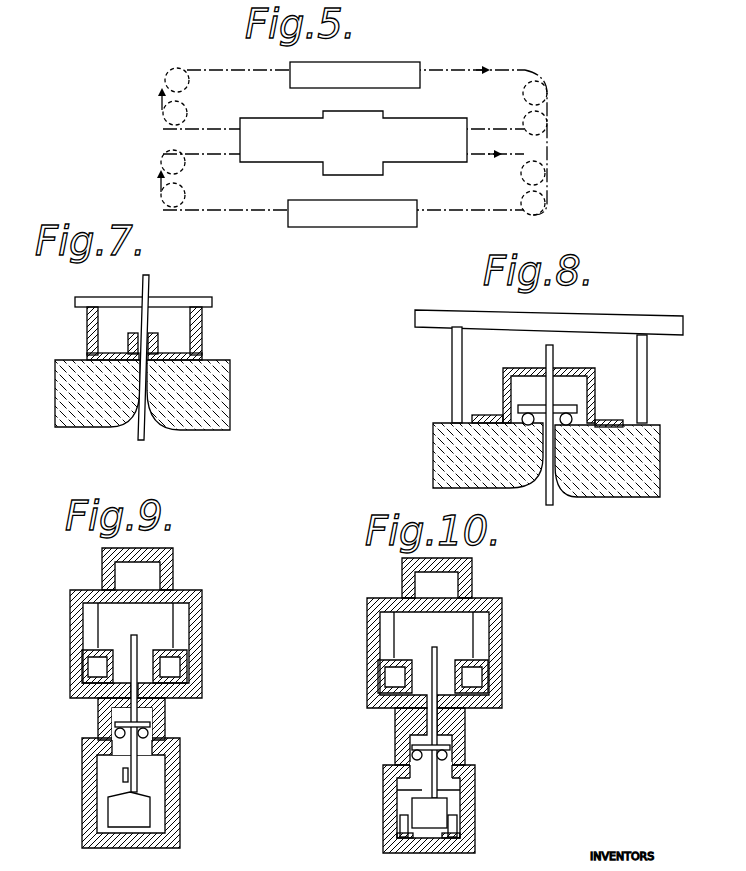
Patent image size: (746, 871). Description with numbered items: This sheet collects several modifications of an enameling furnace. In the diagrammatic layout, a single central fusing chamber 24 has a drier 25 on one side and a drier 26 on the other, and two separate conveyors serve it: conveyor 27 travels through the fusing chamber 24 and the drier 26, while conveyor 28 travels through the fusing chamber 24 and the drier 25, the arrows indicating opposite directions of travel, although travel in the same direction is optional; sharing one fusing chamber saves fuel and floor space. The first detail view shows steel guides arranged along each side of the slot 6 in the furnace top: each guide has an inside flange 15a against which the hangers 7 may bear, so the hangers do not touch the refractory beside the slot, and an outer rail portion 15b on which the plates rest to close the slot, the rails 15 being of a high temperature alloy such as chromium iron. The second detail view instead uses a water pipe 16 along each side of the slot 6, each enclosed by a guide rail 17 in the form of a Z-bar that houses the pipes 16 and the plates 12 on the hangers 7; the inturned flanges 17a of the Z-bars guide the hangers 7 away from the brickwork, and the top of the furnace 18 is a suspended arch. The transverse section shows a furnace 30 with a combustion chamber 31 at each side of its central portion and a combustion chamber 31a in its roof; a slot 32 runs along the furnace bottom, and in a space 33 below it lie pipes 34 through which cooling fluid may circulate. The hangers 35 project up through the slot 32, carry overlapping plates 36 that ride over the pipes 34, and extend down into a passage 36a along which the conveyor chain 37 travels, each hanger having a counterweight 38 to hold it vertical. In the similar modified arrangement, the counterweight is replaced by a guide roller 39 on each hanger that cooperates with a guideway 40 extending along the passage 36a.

In FIG. 5, the fusing chamber 24 is at (447, 124).
In FIG. 5, the drier 25 is at (405, 227).
In FIG. 5, the drier 26 is at (420, 69).
In FIG. 5, the conveyor 27 is at (522, 80).
In FIG. 5, the conveyor 28 is at (465, 214).
In FIG. 7, the slot 6 is at (150, 367).
In FIG. 8, the slot 6 is at (567, 450).
In FIG. 7, the hanger 7 is at (137, 418).
In FIG. 8, the hanger 7 is at (552, 490).
In FIG. 8, the plate 12 is at (568, 410).
In FIG. 7, the rail 15 is at (202, 358).
In FIG. 7, the inside flange 15a is at (160, 338).
In FIG. 7, the outer rail portion 15b is at (202, 342).
In FIG. 8, the pipe 16 is at (570, 422).
In FIG. 8, the guide rail 17 is at (588, 388).
In FIG. 8, the inturned flange 17a is at (538, 368).
In FIG. 8, the top of the furnace 18 is at (647, 477).
In FIG. 9, the furnace 30 is at (200, 632).
In FIG. 10, the furnace 30 is at (498, 638).
In FIG. 9, the combustion chamber 31 is at (100, 667).
In FIG. 10, the combustion chamber 31 is at (397, 677).
In FIG. 9, the combustion chamber 31a is at (148, 569).
In FIG. 10, the combustion chamber 31a is at (448, 578).
In FIG. 9, the slot 32 is at (140, 683).
In FIG. 10, the slot 32 is at (438, 687).
In FIG. 9, the space 33 is at (120, 715).
In FIG. 10, the space 33 is at (445, 740).
In FIG. 9, the pipe 34 is at (148, 735).
In FIG. 10, the pipe 34 is at (415, 752).
In FIG. 9, the hanger 35 is at (130, 637).
In FIG. 10, the hanger 35 is at (432, 647).
In FIG. 9, the overlapping plate 36 is at (153, 722).
In FIG. 10, the overlapping plate 36 is at (452, 748).
In FIG. 9, the passage 36a is at (110, 778).
In FIG. 10, the passage 36a is at (405, 785).
In FIG. 9, the conveyor chain 37 is at (130, 775).
In FIG. 9, the counterweight 38 is at (137, 805).
In FIG. 10, the guide roller 39 is at (435, 808).
In FIG. 10, the guideway 40 is at (457, 823).